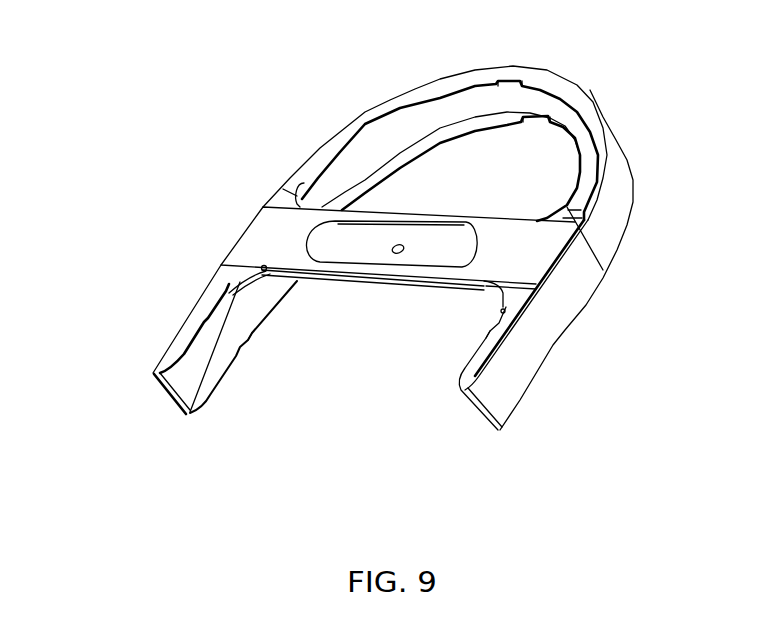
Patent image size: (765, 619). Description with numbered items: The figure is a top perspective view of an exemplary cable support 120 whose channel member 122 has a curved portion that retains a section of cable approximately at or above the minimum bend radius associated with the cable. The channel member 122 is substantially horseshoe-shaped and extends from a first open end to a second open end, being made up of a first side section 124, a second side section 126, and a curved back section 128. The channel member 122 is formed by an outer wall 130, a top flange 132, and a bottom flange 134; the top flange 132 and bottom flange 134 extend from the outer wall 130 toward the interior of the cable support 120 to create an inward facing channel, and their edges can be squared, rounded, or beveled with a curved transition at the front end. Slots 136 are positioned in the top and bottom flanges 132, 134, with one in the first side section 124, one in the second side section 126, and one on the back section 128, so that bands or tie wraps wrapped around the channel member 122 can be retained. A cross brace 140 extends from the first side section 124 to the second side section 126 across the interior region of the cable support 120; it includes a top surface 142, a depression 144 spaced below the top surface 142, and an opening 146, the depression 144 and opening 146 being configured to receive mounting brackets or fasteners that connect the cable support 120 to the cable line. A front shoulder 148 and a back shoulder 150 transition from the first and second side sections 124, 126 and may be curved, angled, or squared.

The cable support 120 is at (226, 173).
The channel member 122 is at (360, 152).
The first side section 124 is at (482, 366).
The second side section 126 is at (189, 323).
The curved back section 128 is at (594, 92).
The outer wall 130 is at (620, 199).
The top flange 132 is at (167, 357).
The bottom flange 134 is at (201, 401).
The slots 136 is at (495, 85).
The cross brace 140 is at (256, 243).
The top surface 142 is at (539, 250).
The depression 144 is at (437, 261).
The opening 146 is at (396, 254).
The front shoulder 148 is at (520, 297).
The back shoulder 150 is at (568, 216).